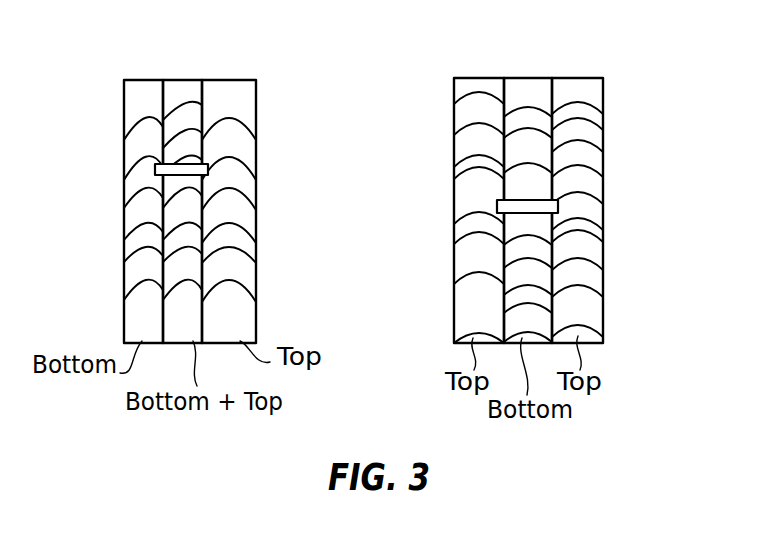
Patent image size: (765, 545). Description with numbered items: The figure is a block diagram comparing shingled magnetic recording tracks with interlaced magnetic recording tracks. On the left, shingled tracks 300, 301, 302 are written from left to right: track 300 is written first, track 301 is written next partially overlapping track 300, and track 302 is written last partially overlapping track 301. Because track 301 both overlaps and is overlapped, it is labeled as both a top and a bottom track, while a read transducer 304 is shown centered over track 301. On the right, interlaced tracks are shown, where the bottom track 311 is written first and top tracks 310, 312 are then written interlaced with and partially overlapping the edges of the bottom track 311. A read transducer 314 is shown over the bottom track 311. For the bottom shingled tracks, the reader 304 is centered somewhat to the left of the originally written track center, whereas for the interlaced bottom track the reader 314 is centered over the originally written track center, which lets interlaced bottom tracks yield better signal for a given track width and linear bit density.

The shingled track 300 is at (147, 85).
The shingled track 301 is at (192, 85).
The shingled track 302 is at (245, 88).
The read transducer 304 is at (208, 172).
The top track 310 is at (474, 82).
The bottom track 311 is at (525, 85).
The top track 312 is at (578, 88).
The read transducer 314 is at (558, 208).